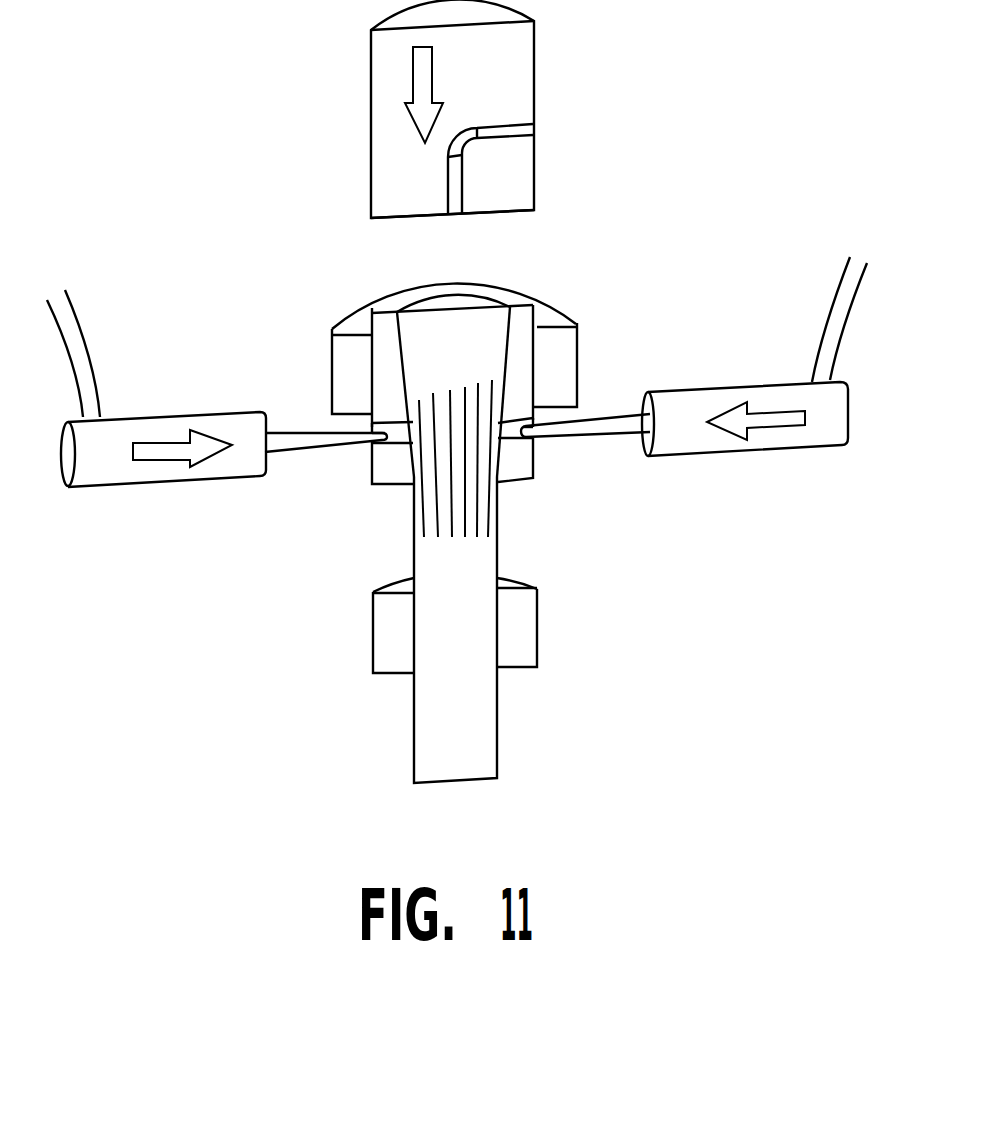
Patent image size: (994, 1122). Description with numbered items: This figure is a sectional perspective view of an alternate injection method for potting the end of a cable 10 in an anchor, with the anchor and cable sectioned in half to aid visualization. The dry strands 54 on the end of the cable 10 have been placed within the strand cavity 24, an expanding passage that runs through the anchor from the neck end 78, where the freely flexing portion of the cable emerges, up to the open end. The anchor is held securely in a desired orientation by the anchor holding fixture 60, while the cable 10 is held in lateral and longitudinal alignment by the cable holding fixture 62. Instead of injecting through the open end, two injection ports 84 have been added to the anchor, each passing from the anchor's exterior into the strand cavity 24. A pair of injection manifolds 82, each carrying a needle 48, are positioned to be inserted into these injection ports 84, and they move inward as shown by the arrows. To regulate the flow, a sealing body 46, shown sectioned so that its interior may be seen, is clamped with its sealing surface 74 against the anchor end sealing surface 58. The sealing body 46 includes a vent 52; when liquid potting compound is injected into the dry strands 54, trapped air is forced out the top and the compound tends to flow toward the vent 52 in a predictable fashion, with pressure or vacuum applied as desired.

The cable 10 is at (403, 636).
The strand cavity 24 is at (391, 371).
The sealing body 46 is at (409, 109).
The needle 48 is at (453, 419).
The vent 52 is at (539, 157).
The dry strands 54 is at (494, 468).
The anchor end sealing surface 58 is at (474, 339).
The anchor holding fixture 60 is at (594, 350).
The cable holding fixture 62 is at (502, 638).
The sealing surface 74 is at (492, 231).
The neck end 78 is at (350, 493).
The injection manifold 82 is at (457, 372).
The injection port 84 is at (470, 481).